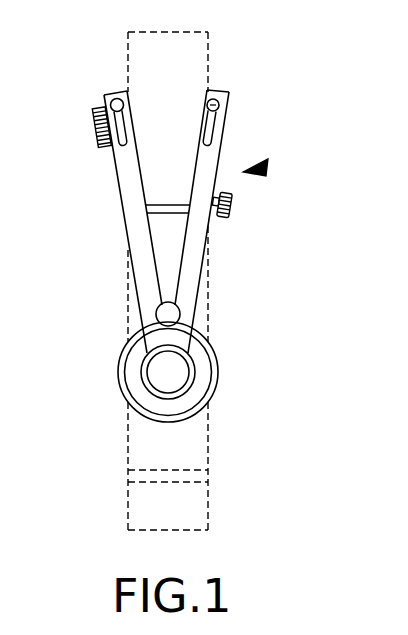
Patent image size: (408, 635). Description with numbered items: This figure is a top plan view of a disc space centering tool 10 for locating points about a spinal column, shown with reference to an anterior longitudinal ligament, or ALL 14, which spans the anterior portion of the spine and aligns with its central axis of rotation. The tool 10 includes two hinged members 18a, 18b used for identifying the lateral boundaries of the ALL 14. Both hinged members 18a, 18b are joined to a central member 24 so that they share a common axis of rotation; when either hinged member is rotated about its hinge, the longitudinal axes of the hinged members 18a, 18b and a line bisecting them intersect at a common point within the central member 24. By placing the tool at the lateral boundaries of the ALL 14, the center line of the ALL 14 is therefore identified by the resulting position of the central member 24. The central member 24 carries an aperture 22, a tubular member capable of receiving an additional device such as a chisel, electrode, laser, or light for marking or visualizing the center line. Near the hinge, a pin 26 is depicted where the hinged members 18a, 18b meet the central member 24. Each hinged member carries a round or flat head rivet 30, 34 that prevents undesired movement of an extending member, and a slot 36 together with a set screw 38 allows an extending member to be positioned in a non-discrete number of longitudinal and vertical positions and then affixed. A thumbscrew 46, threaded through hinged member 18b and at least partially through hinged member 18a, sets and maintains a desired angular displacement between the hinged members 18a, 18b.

The disc space centering tool 10 is at (266, 164).
The ALL (anterior longitudinal ligament) 14 is at (202, 60).
The hinged member 18a is at (122, 208).
The hinged member 18b is at (200, 257).
The aperture 22 is at (181, 379).
The central member 24 is at (122, 388).
The hinge pin 26 is at (180, 312).
The rivet 30 is at (219, 105).
The rivet 34 is at (113, 97).
The slot 36 is at (128, 122).
The set screw 38 is at (92, 136).
The screw 46 is at (233, 210).